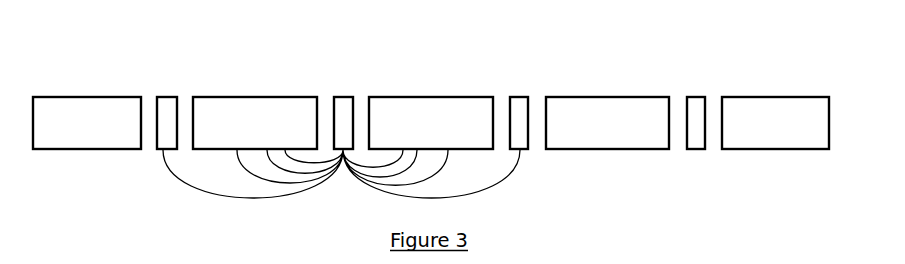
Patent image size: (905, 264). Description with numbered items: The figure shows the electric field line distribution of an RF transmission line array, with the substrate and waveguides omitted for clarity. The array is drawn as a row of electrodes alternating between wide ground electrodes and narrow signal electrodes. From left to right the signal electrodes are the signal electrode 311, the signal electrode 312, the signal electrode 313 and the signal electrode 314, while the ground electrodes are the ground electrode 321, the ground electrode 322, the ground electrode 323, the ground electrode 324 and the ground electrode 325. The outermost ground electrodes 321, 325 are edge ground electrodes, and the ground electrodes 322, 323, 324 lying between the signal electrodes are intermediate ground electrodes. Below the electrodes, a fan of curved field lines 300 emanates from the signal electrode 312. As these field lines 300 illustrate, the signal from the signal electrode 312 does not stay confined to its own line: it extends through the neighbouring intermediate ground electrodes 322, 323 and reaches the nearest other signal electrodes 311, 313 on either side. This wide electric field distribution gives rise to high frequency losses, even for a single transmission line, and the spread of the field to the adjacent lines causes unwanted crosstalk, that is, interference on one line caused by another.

The field lines 300 is at (330, 188).
The signal electrode 311 is at (167, 96).
The signal electrode 312 is at (343, 96).
The signal electrode 313 is at (520, 96).
The signal electrode 314 is at (695, 96).
The edge ground electrode 321 is at (98, 96).
The intermediate ground electrode 322 is at (275, 96).
The intermediate ground electrode 323 is at (452, 96).
The intermediate ground electrode 324 is at (626, 96).
The edge ground electrode 325 is at (771, 96).